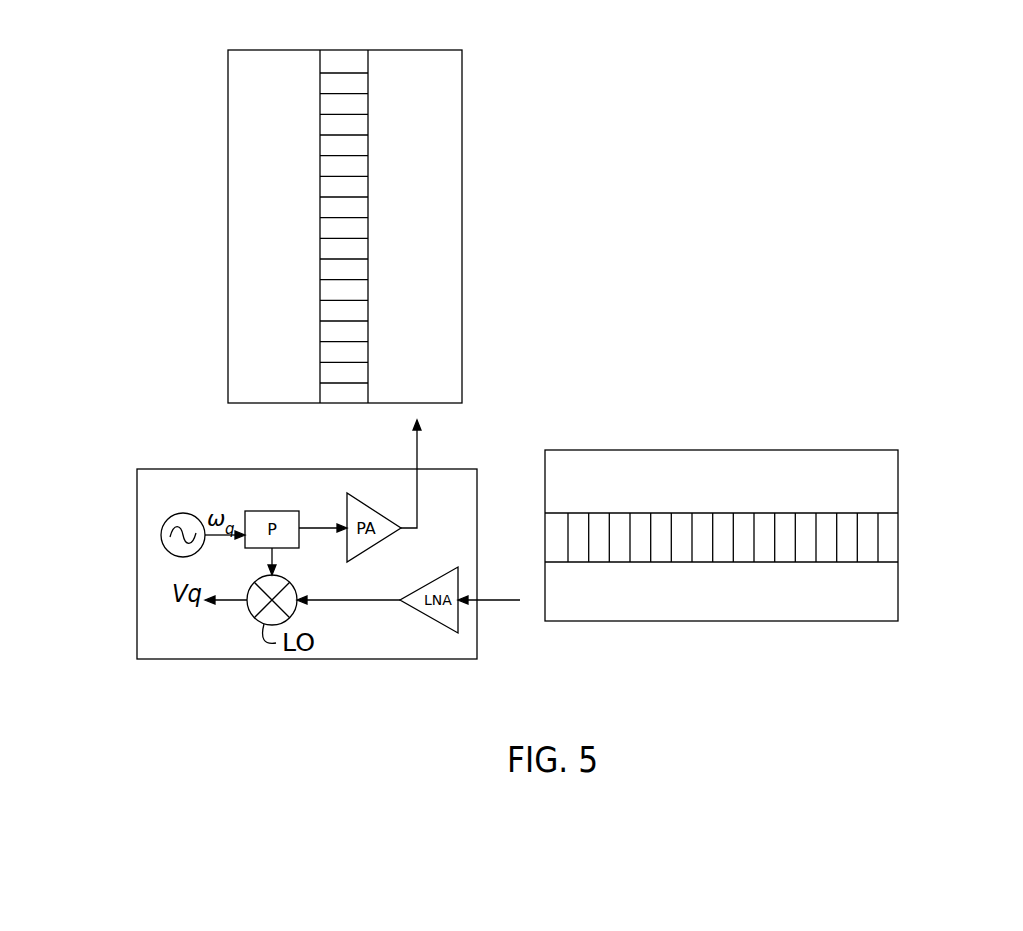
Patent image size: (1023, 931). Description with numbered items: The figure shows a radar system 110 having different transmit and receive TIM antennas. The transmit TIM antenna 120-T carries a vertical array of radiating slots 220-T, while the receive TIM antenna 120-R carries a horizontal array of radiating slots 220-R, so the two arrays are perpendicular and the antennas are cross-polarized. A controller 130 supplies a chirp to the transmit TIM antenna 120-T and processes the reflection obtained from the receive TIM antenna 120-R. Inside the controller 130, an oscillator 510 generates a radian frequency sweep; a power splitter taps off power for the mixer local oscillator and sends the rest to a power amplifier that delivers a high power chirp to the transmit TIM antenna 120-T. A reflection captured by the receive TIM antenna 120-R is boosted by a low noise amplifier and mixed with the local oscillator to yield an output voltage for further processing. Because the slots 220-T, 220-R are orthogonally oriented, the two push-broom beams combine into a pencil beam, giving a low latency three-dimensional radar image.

The radar system 110 is at (862, 163).
The transmit TIM antenna 120-T is at (228, 108).
The radiating slots of the transmit TIM antenna 220-T is at (343, 100).
The receive TIM antenna 120-R is at (898, 467).
The radiating slots of the receive TIM antenna 220-R is at (891, 549).
The controller 130 is at (193, 651).
The oscillator 510 is at (165, 540).